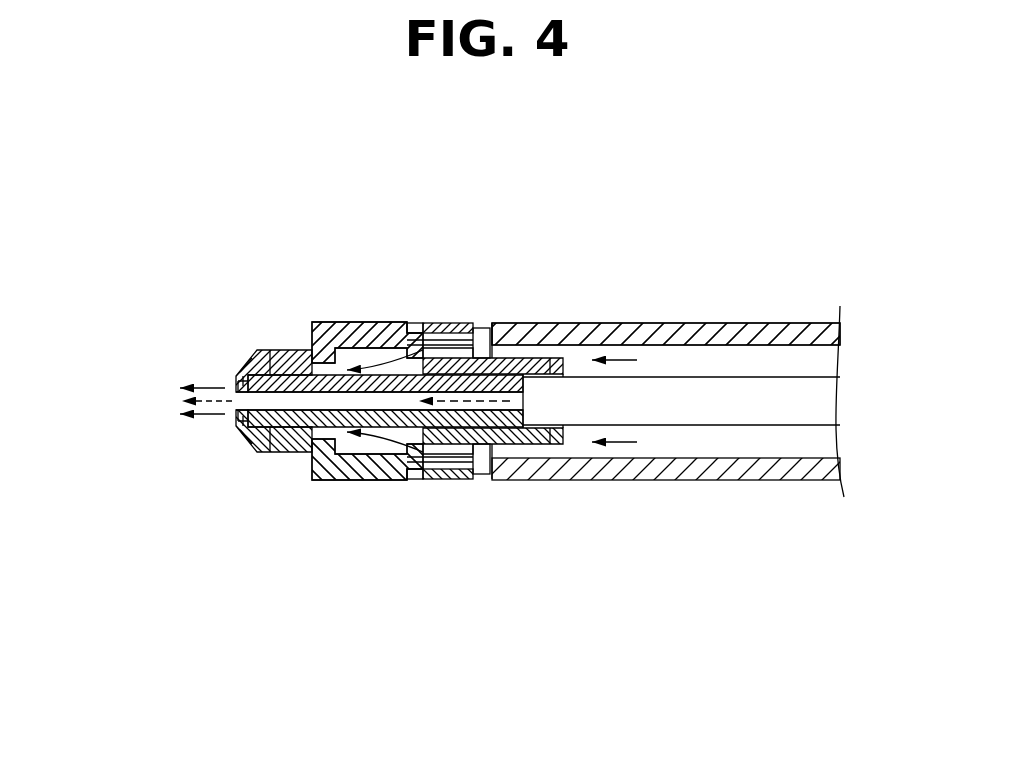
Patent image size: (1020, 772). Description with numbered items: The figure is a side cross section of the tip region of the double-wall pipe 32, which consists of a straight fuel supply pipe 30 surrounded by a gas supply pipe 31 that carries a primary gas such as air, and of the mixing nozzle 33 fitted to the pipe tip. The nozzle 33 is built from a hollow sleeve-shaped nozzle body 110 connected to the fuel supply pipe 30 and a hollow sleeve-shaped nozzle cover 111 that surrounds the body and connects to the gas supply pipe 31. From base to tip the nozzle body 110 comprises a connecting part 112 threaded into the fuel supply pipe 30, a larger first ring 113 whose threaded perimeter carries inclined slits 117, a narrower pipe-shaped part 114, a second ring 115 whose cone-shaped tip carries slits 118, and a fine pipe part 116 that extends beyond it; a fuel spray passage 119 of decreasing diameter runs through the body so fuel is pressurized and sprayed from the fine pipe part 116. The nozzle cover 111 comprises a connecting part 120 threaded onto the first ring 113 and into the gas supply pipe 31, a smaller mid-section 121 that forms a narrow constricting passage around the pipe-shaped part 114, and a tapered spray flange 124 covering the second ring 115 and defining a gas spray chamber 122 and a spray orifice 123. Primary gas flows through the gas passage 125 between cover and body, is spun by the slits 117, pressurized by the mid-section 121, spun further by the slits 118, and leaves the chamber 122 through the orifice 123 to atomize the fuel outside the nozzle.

The fuel supply pipe 30 is at (748, 416).
The gas supply pipe 31 is at (790, 333).
The double-wall pipe 32 is at (722, 272).
The mixing nozzle 33 is at (310, 518).
The nozzle body 110 is at (383, 440).
The nozzle cover 111 is at (344, 308).
The connecting part 112 is at (550, 442).
The first ring 113 is at (465, 453).
The pipe-shaped part 114 is at (415, 479).
The second ring 115 is at (273, 452).
The fine pipe part 116 is at (238, 431).
The slits 117 is at (478, 330).
The slits 118 is at (248, 441).
The fuel spray passage 119 is at (353, 404).
The connecting part 120 is at (440, 335).
The mid-section 121 is at (282, 350).
The gas spray chamber 122 is at (232, 384).
The spray orifice 123 is at (215, 420).
The spray flange 124 is at (245, 370).
The gas passage 125 is at (377, 343).